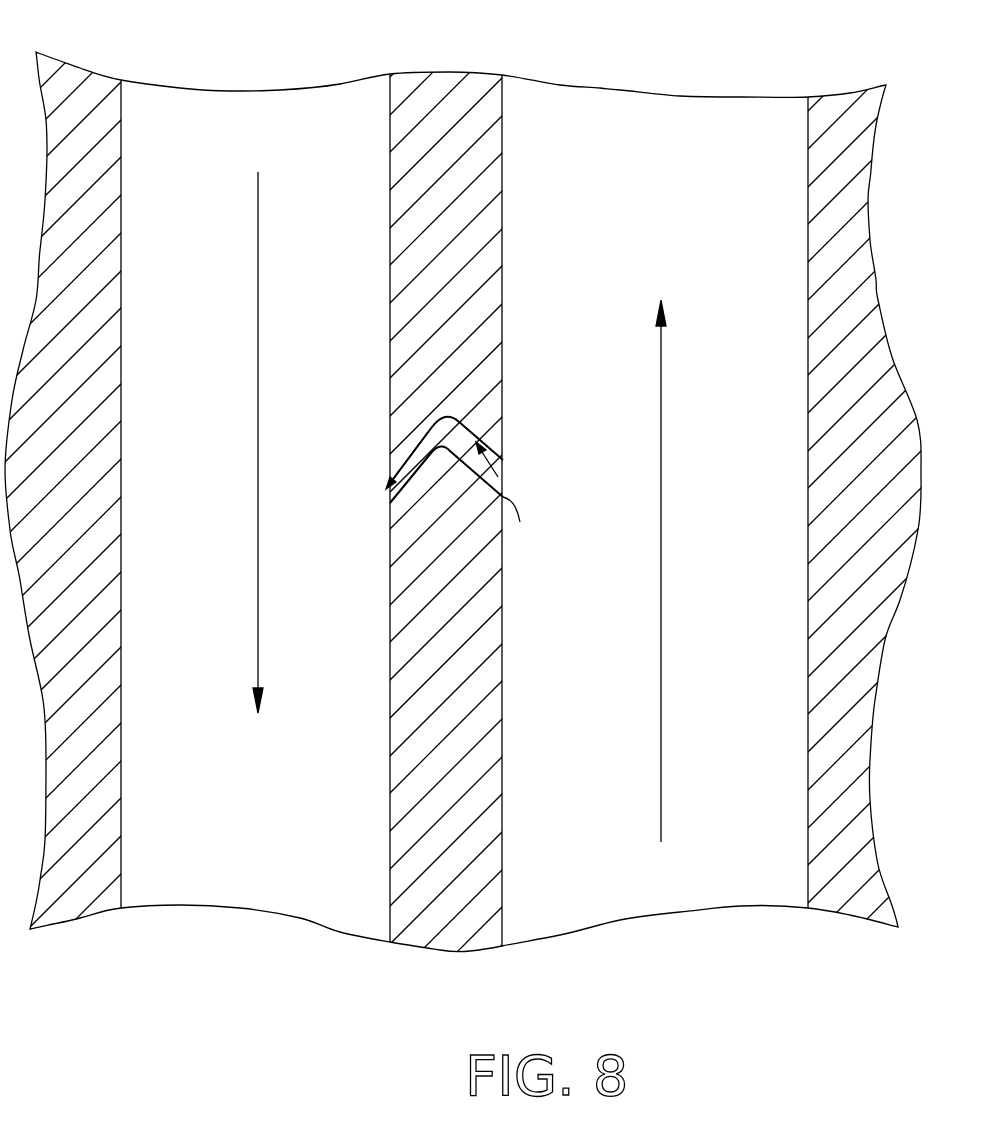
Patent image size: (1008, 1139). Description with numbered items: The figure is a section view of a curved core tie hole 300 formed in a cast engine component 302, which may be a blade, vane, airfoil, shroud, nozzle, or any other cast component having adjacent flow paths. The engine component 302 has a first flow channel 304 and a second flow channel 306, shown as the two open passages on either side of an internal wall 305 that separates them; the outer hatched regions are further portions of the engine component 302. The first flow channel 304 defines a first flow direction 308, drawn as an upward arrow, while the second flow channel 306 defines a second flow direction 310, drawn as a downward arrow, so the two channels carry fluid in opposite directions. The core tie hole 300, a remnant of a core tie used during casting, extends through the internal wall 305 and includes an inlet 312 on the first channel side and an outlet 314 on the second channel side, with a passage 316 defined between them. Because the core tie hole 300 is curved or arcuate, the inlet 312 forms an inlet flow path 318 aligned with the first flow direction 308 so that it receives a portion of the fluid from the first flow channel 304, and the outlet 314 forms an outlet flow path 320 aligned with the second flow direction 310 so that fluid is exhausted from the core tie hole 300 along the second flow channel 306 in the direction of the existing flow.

The core tie hole 300 is at (451, 425).
The cast engine component 302 is at (148, 37).
The first flow channel 304 is at (603, 113).
The internal wall 305 is at (438, 755).
The second flow channel 306 is at (300, 875).
The first flow direction 308 is at (662, 738).
The second flow direction 310 is at (258, 217).
The inlet 312 is at (503, 477).
The outlet 314 is at (387, 478).
The passage 316 is at (417, 423).
The inlet flow path 318 is at (513, 496).
The outlet flow path 320 is at (412, 453).